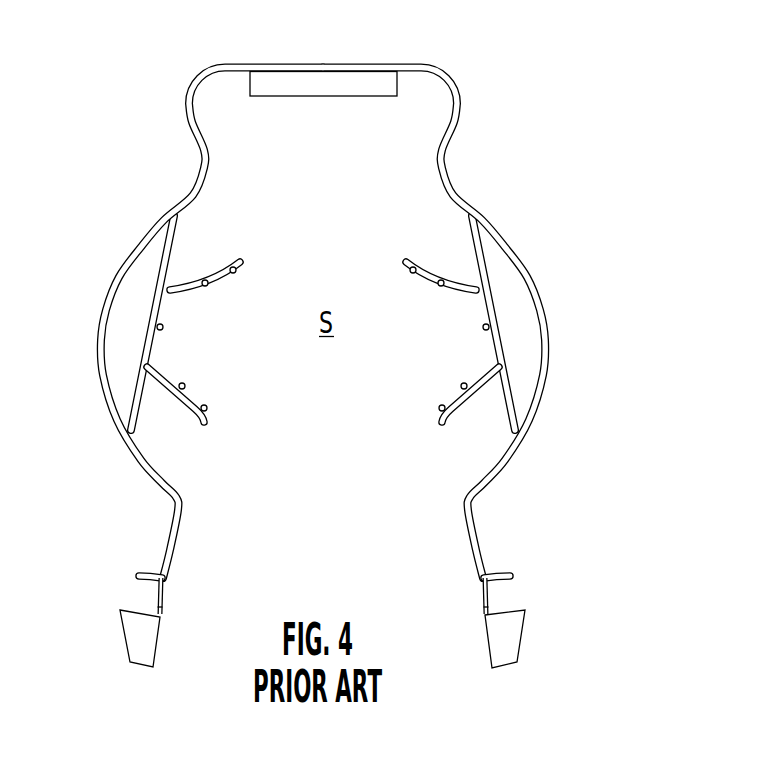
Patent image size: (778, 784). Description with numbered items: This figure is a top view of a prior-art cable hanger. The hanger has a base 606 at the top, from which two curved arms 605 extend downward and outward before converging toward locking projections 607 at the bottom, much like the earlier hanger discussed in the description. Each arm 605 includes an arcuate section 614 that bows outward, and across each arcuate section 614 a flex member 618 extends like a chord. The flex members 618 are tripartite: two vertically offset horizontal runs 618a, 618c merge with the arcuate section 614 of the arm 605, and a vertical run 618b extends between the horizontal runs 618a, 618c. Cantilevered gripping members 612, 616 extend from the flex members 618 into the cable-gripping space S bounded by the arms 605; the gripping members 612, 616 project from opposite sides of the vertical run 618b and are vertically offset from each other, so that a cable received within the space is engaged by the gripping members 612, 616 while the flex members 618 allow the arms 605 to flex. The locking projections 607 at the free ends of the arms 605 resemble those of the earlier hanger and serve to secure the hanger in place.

The curved arms 605 is at (469, 204).
The base 606 is at (418, 64).
The locking projections 607 is at (512, 635).
The gripping member 612 is at (481, 330).
The arcuate sections 614 is at (552, 330).
The gripping member 616 is at (458, 406).
The flex members 618 is at (493, 323).
The horizontal run 618a is at (479, 250).
The vertical run 618b is at (493, 320).
The horizontal run 618c is at (507, 392).